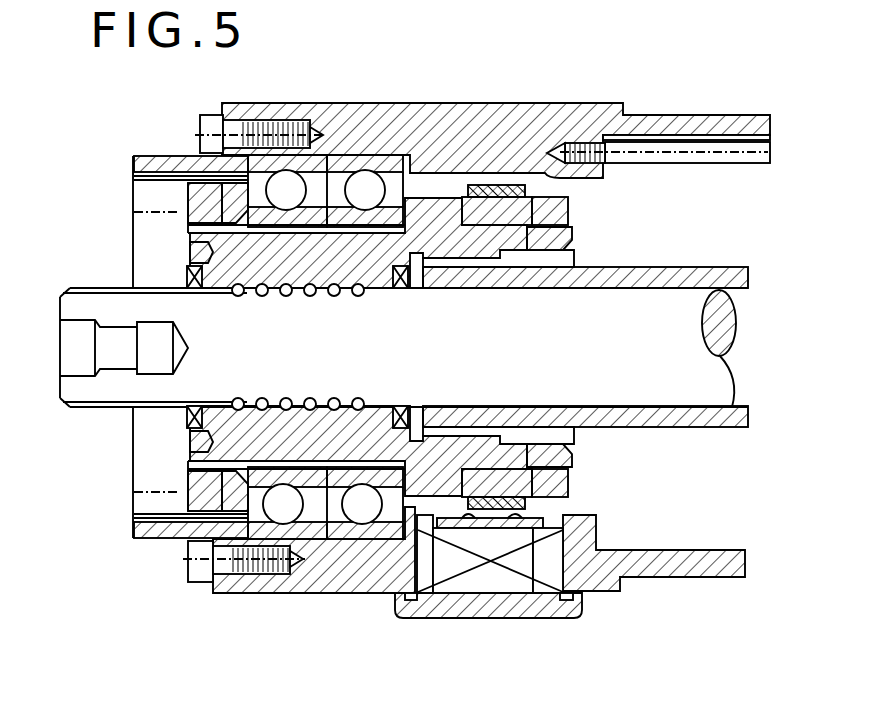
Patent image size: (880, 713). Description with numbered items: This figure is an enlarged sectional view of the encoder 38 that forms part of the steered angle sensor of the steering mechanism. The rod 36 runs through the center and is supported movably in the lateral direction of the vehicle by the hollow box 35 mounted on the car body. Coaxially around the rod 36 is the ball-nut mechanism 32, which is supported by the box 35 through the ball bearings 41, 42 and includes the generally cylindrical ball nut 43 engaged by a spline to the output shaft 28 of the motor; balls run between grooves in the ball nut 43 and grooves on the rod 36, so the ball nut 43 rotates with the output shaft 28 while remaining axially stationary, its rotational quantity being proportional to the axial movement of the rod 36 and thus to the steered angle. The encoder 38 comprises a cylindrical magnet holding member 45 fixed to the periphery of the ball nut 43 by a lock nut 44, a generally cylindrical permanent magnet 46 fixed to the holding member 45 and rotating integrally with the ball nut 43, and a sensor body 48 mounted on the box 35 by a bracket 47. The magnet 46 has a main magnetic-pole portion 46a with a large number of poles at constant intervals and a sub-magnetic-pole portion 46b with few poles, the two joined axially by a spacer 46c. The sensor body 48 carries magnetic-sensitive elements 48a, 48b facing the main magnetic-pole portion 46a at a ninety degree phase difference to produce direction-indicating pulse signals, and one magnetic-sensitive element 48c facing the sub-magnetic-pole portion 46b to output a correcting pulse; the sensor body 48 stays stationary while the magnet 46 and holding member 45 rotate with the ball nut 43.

The output shaft 28 is at (640, 270).
The ball-nut mechanism 32 is at (300, 298).
The box 35 is at (477, 103).
The rod 36 is at (70, 400).
The encoder 38 is at (603, 498).
The ball bearing 41 is at (286, 185).
The ball bearing 42 is at (363, 185).
The ball nut 43 is at (437, 210).
The lock nut 44 is at (565, 484).
The magnet holding member 45 is at (553, 443).
The permanent magnet 46 is at (498, 183).
The main magnetic-pole portion 46a is at (465, 475).
The sub-magnetic-pole portion 46b is at (476, 470).
The spacer 46c is at (492, 498).
The bracket 47 is at (508, 610).
The sensor body 48 is at (478, 578).
The magnetic-sensitive element 48a is at (408, 624).
The magnetic-sensitive element 48b is at (445, 520).
The magnetic-sensitive element 48c is at (533, 593).